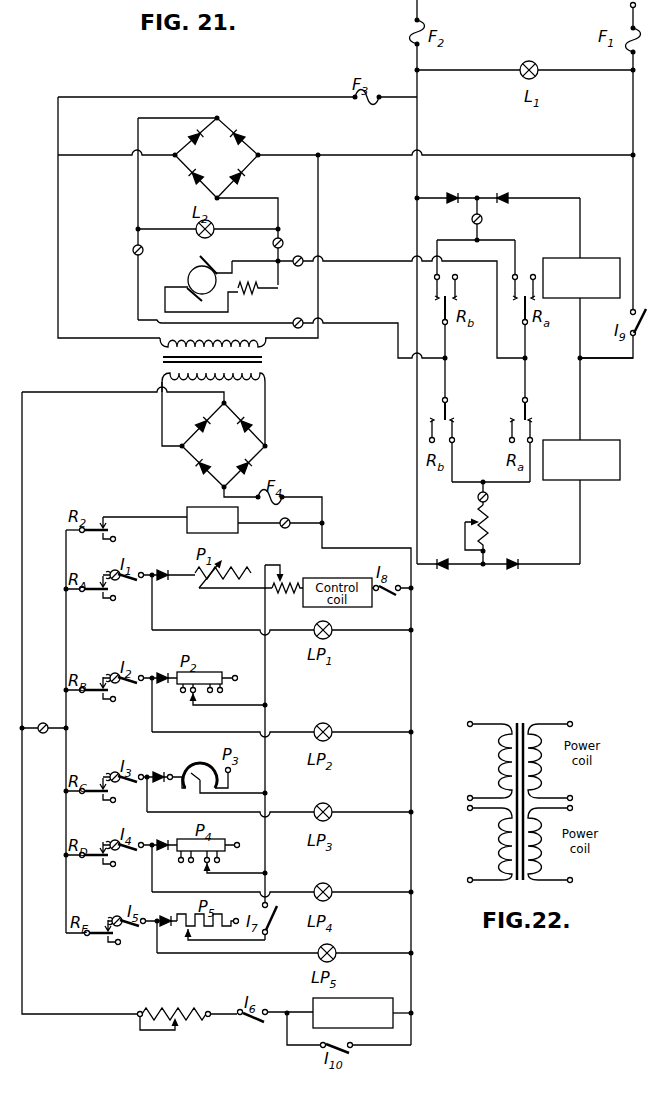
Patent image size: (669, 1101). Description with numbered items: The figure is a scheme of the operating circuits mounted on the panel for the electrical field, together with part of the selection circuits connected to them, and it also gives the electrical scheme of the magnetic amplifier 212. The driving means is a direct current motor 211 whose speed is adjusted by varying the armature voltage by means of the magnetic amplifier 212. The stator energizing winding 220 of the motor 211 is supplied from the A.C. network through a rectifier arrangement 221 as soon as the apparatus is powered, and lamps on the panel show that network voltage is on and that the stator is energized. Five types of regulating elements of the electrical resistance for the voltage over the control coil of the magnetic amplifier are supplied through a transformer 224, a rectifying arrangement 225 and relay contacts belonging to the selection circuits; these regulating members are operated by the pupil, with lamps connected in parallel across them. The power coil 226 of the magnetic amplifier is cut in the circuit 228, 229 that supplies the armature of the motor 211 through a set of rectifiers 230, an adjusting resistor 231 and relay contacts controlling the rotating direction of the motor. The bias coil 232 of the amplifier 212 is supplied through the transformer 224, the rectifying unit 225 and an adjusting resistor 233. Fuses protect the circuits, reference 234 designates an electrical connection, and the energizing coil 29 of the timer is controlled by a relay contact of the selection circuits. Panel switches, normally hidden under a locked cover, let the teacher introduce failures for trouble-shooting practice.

In FIG. 21, the rectifier arrangement 221 is at (256, 151).
In FIG. 21, the electrical connection 234 is at (282, 239).
In FIG. 21, the direct current motor 211 is at (190, 276).
In FIG. 21, the stator energizing winding 220 is at (256, 295).
In FIG. 21, the armature supply circuit 228 is at (353, 263).
In FIG. 21, the armature supply circuit 229 is at (365, 326).
In FIG. 21, the transformer 224 is at (262, 360).
In FIG. 21, the rectifying arrangement 225 is at (262, 447).
In FIG. 21, the energizing coil of the timer 29 is at (212, 520).
In FIG. 21, the power coil 226 is at (598, 440).
In FIG. 21, the adjusting resistor 231 is at (493, 537).
In FIG. 21, the set of rectifiers 230 is at (512, 572).
In FIG. 21, the bias coil 232 is at (375, 998).
In FIG. 22, the bias coil 232 is at (480, 775).
In FIG. 21, the adjusting resistor 233 is at (186, 1023).
In FIG. 22, the adjusting resistor 233 is at (480, 868).
In FIG. 22, the magnetic amplifier 212 is at (532, 720).